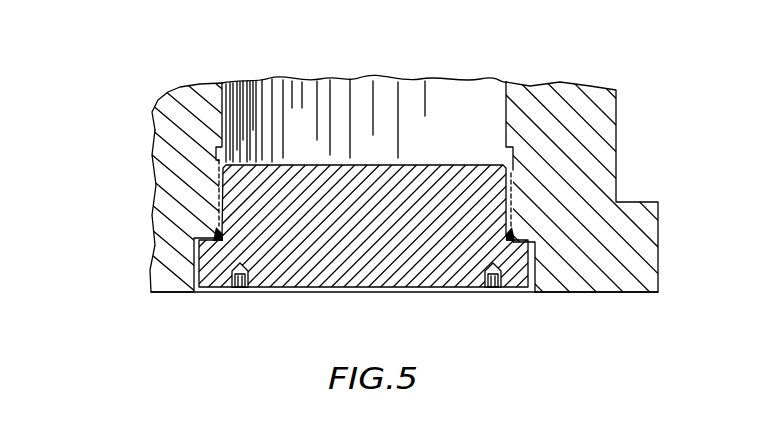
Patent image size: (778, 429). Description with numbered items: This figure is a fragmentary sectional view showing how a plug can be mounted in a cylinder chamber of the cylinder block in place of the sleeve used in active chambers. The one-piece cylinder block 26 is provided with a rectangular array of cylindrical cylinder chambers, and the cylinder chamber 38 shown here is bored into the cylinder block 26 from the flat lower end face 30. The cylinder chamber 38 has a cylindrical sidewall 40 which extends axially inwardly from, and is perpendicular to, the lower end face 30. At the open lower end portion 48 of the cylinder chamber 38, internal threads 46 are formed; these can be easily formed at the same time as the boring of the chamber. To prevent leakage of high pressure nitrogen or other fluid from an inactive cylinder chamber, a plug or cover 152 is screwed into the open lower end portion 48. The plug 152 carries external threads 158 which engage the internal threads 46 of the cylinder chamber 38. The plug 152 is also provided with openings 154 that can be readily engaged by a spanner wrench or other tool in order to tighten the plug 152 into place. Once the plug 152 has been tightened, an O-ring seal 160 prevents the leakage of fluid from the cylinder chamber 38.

The cylinder block 26 is at (145, 110).
The lower end face 30 is at (600, 293).
The cylinder chamber 38 is at (425, 72).
The cylindrical sidewall 40 is at (512, 103).
The internal threads 46 is at (515, 167).
The open lower end portion 48 is at (510, 133).
The plug 152 is at (372, 284).
The openings 154 is at (236, 292).
The external threads 158 is at (221, 194).
The O-ring seal 160 is at (218, 232).